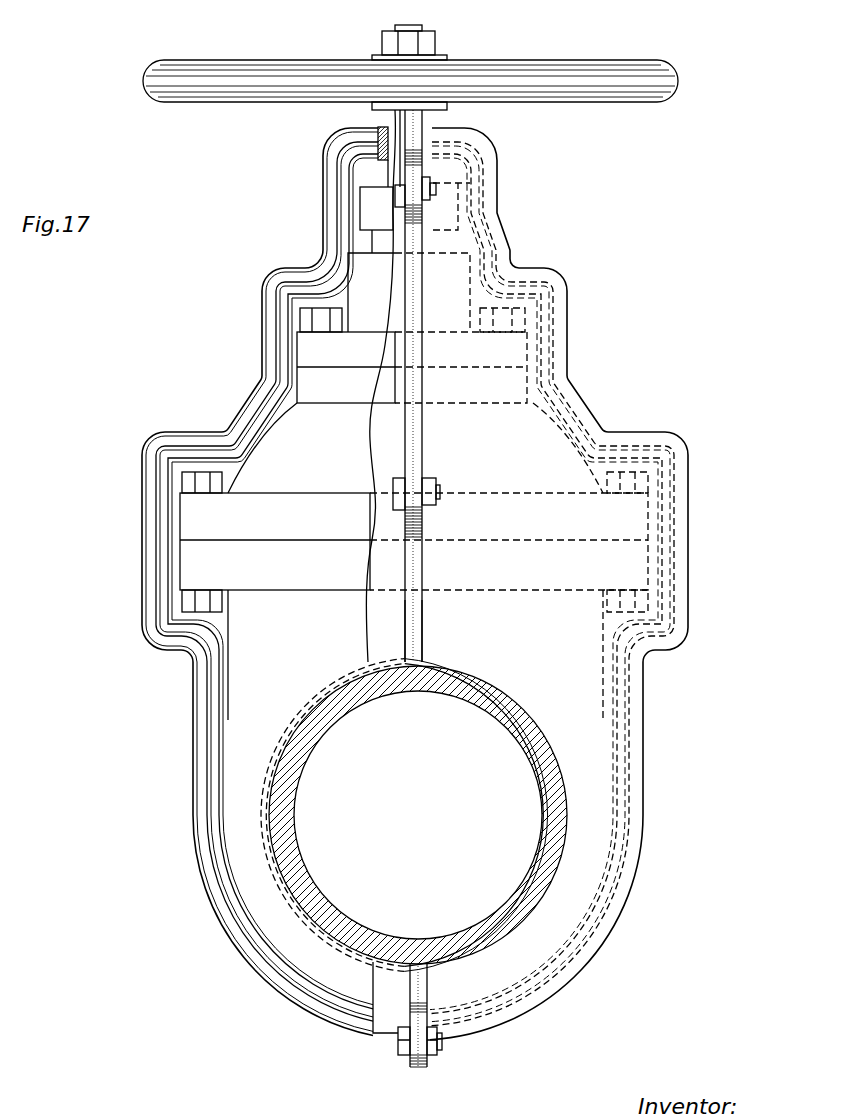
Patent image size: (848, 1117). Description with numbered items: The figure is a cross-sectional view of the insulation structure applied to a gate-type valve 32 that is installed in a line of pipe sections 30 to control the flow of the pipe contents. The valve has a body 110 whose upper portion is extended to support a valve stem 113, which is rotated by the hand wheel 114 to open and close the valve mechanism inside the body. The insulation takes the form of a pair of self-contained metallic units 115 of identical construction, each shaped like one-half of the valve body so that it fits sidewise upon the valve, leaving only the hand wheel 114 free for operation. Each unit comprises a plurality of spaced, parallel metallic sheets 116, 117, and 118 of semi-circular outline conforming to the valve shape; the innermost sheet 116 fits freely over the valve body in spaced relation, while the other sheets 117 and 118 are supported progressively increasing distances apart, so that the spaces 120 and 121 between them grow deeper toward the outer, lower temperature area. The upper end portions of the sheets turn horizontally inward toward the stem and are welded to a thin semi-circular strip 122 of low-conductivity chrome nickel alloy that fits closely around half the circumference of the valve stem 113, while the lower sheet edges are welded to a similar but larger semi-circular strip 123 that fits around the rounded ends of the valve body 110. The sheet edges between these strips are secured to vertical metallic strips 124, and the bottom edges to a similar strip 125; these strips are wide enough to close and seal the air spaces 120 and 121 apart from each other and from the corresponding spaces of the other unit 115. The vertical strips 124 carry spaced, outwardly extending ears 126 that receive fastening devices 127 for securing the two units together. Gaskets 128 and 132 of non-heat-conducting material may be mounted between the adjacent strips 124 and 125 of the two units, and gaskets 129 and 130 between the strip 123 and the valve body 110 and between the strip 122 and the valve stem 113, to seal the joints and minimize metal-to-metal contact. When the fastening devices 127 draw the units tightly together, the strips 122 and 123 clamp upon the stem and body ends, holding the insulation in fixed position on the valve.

The valve 32 is at (440, 56).
The hand wheel 114 is at (680, 86).
The gasket 130 is at (377, 128).
The valve stem 113 is at (425, 118).
The semi-circular metallic strip 122 is at (378, 160).
The ears 126 is at (430, 165).
The fastening devices 127 is at (434, 200).
The gasket 128 is at (412, 430).
The metallic strips 124 is at (408, 614).
The self-contained metallic unit 115 is at (148, 646).
The metallic sheet 118 is at (193, 760).
The metallic sheet 117 is at (206, 735).
The innermost metallic sheet 116 is at (216, 712).
The valve body 110 is at (240, 818).
The pipe section 30 is at (476, 690).
The space 120 is at (217, 863).
The space 121 is at (224, 903).
The gasket 129 is at (495, 955).
The semi-circular strip 123 is at (530, 925).
The gasket 132 is at (430, 1000).
The strip 125 is at (411, 988).